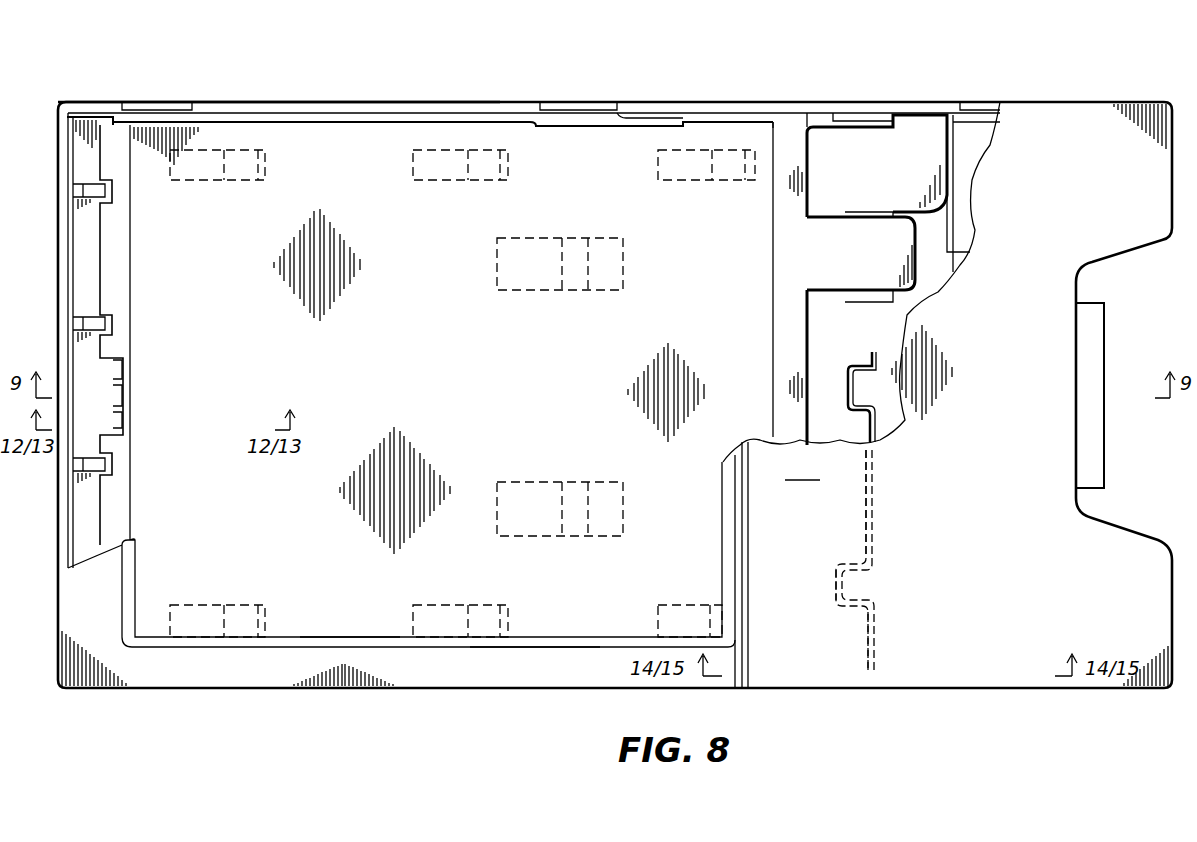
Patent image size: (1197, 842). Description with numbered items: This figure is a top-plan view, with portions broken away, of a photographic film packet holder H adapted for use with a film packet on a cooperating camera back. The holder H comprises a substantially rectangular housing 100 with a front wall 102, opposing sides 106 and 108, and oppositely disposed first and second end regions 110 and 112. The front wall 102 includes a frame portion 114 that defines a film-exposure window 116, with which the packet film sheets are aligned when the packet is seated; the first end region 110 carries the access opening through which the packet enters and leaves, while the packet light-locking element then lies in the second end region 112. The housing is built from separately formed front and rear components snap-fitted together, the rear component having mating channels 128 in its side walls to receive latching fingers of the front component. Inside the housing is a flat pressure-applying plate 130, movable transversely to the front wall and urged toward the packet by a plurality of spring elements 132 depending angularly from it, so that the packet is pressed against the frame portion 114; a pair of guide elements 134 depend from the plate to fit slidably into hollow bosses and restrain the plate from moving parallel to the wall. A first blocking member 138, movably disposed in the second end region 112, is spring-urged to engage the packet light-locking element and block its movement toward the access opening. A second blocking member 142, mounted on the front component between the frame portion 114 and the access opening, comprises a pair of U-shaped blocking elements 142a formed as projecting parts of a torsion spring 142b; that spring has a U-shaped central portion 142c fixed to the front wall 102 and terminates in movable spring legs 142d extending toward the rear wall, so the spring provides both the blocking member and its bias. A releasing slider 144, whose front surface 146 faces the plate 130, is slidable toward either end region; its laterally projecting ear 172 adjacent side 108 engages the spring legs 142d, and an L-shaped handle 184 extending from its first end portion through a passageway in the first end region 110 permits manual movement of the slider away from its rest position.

The housing 100 is at (326, 88).
The front wall 102 is at (615, 395).
The side 106 is at (410, 690).
The side 108 is at (690, 101).
The first end region 110 is at (945, 690).
The second end region 112 is at (220, 690).
The frame portion 114 is at (518, 672).
The film-exposure window 116 is at (338, 636).
The channels 128 is at (165, 101).
The pressure-applying plate 130 is at (430, 374).
The spring elements 132 is at (240, 183).
The guide elements 134 is at (576, 292).
The first blocking member 138 is at (120, 398).
The second blocking member 142 is at (830, 598).
The U-shaped blocking elements 142a is at (834, 580).
The torsion spring 142b is at (875, 500).
The U-shaped central portion 142c is at (845, 380).
The spring legs 142d is at (880, 670).
The slider 144 is at (815, 118).
The front surface 146 is at (888, 176).
The ear 172 is at (890, 113).
The L-shaped handle 184 is at (1105, 312).
The photographic film packet holder H is at (442, 71).